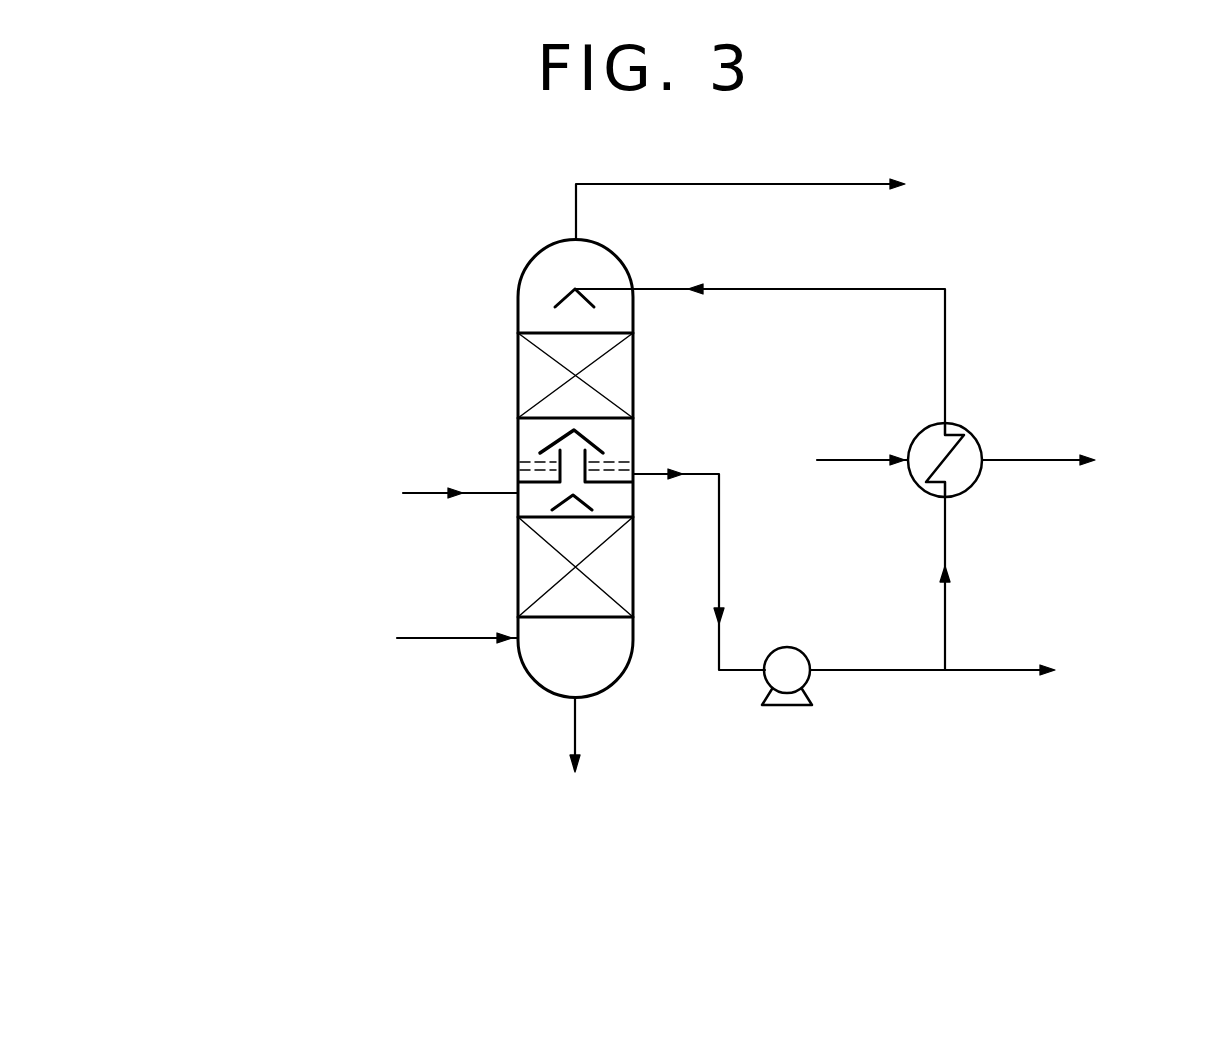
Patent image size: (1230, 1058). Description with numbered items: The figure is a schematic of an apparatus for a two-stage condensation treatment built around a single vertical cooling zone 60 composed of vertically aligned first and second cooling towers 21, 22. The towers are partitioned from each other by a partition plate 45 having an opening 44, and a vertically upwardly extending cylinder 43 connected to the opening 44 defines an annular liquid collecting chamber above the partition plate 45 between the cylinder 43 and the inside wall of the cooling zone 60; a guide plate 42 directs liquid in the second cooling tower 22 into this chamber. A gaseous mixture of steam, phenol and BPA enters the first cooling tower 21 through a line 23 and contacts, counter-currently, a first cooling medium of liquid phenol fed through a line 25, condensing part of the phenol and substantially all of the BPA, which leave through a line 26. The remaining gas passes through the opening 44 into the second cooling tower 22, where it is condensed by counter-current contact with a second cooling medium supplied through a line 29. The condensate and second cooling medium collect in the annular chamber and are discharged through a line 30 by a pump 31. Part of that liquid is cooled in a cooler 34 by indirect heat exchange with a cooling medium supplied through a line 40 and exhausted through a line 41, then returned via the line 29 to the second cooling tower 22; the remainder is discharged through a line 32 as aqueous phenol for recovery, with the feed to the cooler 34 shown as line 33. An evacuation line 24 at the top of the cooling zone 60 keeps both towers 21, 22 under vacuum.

The first cooling tower 21 is at (634, 594).
The second cooling tower 22 is at (636, 352).
The line 23 is at (447, 639).
The evacuation line 24 is at (772, 184).
The line 25 is at (438, 494).
The line 26 is at (565, 727).
The line 29 is at (772, 289).
The line 30 is at (720, 553).
The pump 31 is at (800, 652).
The line 32 is at (983, 671).
The cooler feed line 33 is at (946, 607).
The cooler 34 is at (973, 436).
The line 40 is at (848, 459).
The line 41 is at (1040, 459).
The guide plate 42 is at (604, 440).
The cylinder 43 is at (545, 446).
The opening 44 is at (600, 463).
The partition plate 45 is at (605, 485).
The cooling zone 60 is at (503, 363).